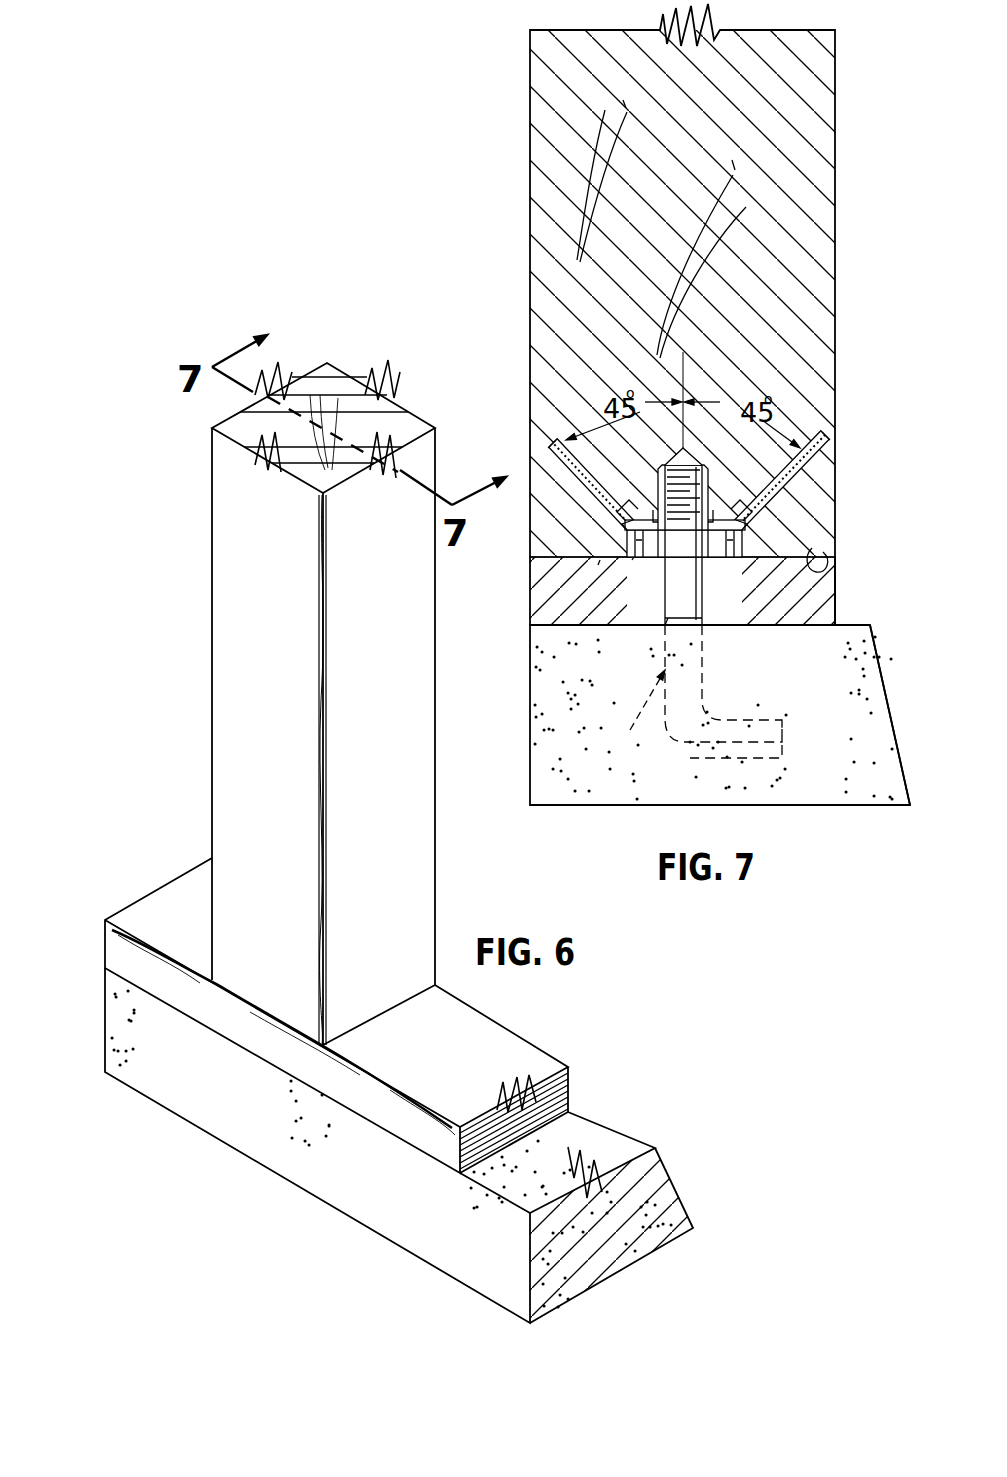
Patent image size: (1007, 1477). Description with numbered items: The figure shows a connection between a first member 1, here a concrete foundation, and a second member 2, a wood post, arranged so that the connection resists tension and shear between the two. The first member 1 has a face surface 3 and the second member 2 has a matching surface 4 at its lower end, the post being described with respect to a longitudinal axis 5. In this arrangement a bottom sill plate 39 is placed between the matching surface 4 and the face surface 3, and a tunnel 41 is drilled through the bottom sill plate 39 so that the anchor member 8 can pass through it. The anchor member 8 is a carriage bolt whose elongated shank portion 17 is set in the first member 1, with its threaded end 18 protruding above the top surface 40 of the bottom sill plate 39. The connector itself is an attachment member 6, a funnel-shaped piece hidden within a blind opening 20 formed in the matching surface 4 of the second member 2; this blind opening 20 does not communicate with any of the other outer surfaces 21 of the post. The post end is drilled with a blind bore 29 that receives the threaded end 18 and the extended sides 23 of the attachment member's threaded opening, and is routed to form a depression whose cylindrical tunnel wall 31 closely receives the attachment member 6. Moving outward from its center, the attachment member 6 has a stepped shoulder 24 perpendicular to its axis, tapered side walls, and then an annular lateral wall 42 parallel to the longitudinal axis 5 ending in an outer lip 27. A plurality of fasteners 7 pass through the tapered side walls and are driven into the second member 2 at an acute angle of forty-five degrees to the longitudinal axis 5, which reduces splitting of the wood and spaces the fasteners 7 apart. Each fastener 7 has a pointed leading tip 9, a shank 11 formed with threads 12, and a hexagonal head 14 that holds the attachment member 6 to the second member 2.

In FIG. 7, the first member 1 is at (881, 627).
In FIG. 6, the first member 1 is at (643, 1121).
In FIG. 7, the second member 2 is at (846, 235).
In FIG. 6, the second member 2 is at (446, 687).
In FIG. 7, the face surface 3 is at (845, 627).
In FIG. 6, the face surface 3 is at (584, 1124).
In FIG. 7, the matching surface 4 is at (808, 600).
In FIG. 7, the longitudinal axis 5 is at (688, 384).
In FIG. 7, the attachment member 6 is at (598, 565).
In FIG. 7, the fasteners 7 is at (539, 451).
In FIG. 7, the anchor member 8 is at (641, 715).
In FIG. 7, the leading tips 9 is at (550, 437).
In FIG. 7, the shank 11 is at (540, 502).
In FIG. 7, the threads 12 is at (541, 497).
In FIG. 7, the hexagonal heads 14 is at (686, 568).
In FIG. 7, the elongated shank portion 17 is at (706, 686).
In FIG. 7, the threaded end 18 is at (699, 464).
In FIG. 7, the blind opening 20 is at (632, 560).
In FIG. 7, the other outer surfaces 21 is at (530, 187).
In FIG. 6, the other outer surfaces 21 is at (245, 730).
In FIG. 7, the extended sides 23 is at (711, 471).
In FIG. 7, the stepped shoulder 24 is at (658, 520).
In FIG. 7, the outer lip 27 is at (746, 570).
In FIG. 7, the blind bore 29 is at (668, 462).
In FIG. 7, the tunnel wall 31 is at (752, 525).
In FIG. 7, the bottom sill plate 39 is at (532, 585).
In FIG. 6, the bottom sill plate 39 is at (546, 1055).
In FIG. 7, the top surface 40 is at (814, 547).
In FIG. 6, the top surface 40 is at (494, 1044).
In FIG. 7, the tunnel 41 is at (700, 603).
In FIG. 7, the lateral wall 42 is at (618, 547).